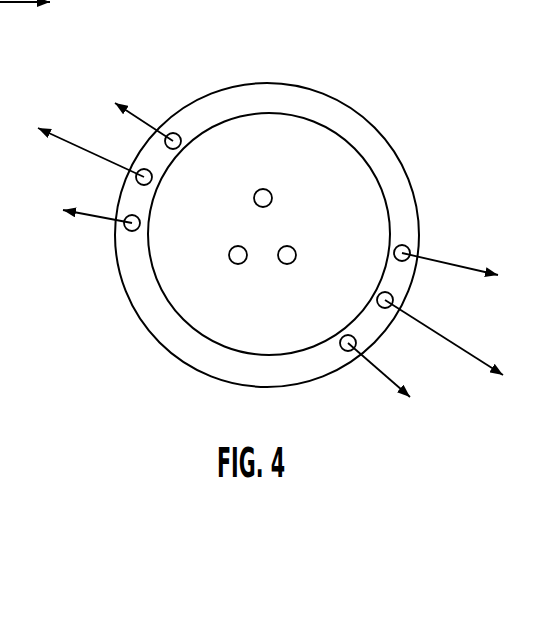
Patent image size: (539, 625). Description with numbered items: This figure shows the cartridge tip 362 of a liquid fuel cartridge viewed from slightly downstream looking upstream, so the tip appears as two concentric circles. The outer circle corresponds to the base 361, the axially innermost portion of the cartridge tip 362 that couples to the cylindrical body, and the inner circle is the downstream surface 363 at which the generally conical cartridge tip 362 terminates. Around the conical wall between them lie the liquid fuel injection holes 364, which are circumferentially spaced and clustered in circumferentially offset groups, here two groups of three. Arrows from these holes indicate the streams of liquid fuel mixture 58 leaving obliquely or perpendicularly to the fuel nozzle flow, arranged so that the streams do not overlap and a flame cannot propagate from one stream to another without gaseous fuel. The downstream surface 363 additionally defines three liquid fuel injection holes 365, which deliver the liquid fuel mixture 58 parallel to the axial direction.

The liquid fuel mixture 58 is at (14, 3).
The base 361 is at (345, 106).
The cartridge tip 362 is at (445, 95).
The downstream surface 363 is at (218, 312).
The liquid fuel injection holes 364 is at (178, 133).
The liquid fuel injection holes 365 is at (296, 255).